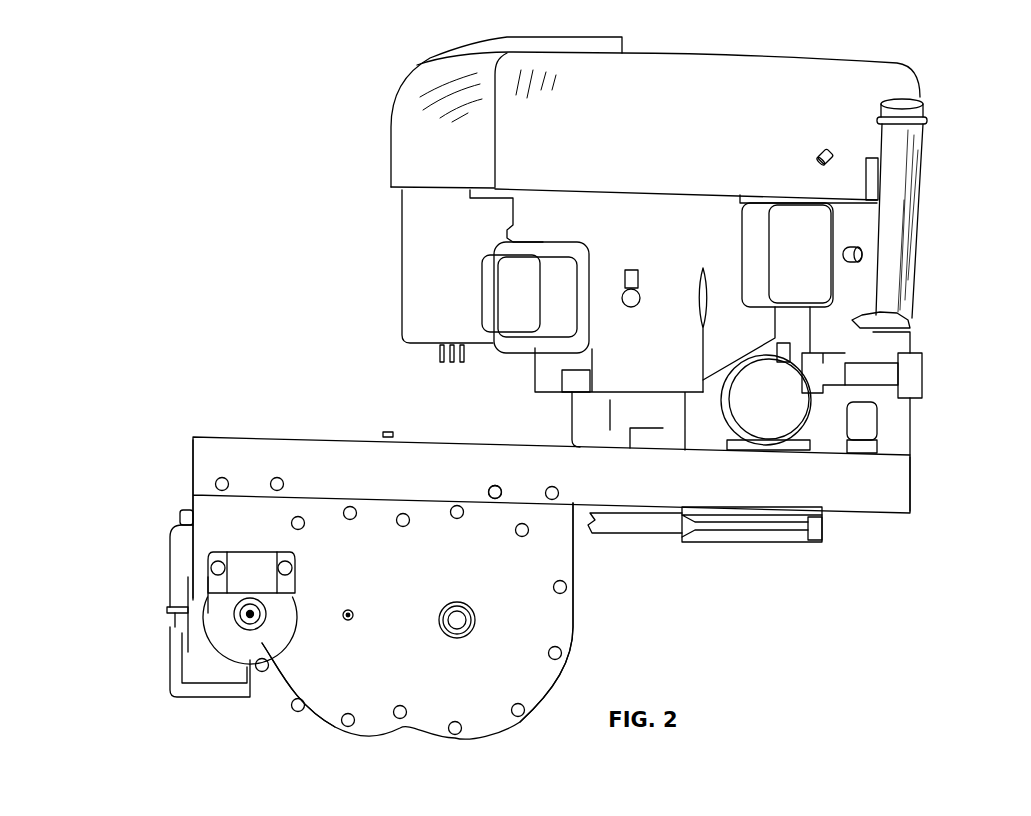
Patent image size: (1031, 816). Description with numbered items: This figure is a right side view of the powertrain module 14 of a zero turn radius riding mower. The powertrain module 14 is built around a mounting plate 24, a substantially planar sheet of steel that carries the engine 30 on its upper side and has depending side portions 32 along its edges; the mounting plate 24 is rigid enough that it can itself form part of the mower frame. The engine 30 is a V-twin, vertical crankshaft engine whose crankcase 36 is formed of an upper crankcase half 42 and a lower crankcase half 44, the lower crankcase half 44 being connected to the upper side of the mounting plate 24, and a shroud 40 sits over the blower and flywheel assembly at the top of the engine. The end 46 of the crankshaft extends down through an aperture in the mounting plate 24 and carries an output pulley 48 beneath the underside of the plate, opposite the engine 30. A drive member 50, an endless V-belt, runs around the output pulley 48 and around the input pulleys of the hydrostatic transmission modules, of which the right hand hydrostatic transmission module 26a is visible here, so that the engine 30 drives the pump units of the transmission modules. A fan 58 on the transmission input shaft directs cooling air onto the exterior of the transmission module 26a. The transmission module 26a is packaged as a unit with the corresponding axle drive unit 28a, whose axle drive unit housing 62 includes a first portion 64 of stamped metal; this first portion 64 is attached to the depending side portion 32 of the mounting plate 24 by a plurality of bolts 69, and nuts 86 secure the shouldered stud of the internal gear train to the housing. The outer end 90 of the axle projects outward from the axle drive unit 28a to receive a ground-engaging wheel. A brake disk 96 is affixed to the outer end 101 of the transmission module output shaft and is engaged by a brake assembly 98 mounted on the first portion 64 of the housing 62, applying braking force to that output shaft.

The powertrain module 14 is at (263, 294).
The mounting plate 24 is at (262, 438).
The hydrostatic transmission module 26a is at (168, 704).
The axle drive unit 28a is at (552, 705).
The engine 30 is at (952, 132).
The depending side portion 32 is at (203, 458).
The crankcase 36 is at (903, 308).
The shroud 40 is at (680, 55).
The upper crankcase half 42 is at (900, 348).
The lower crankcase half 44 is at (897, 428).
The end of the crankshaft 46 is at (752, 542).
The output pulley 48 is at (793, 543).
The drive member 50 is at (657, 533).
The fan 58 is at (180, 518).
The axle drive unit housing 62 is at (552, 705).
The first portion 64 is at (377, 688).
The bolt 69 is at (495, 500).
The nut 86 is at (347, 608).
The outer end of axle 90 is at (472, 617).
The brake disk 96 is at (278, 690).
The brake assembly 98 is at (262, 567).
The outer end of output shaft 101 is at (246, 612).